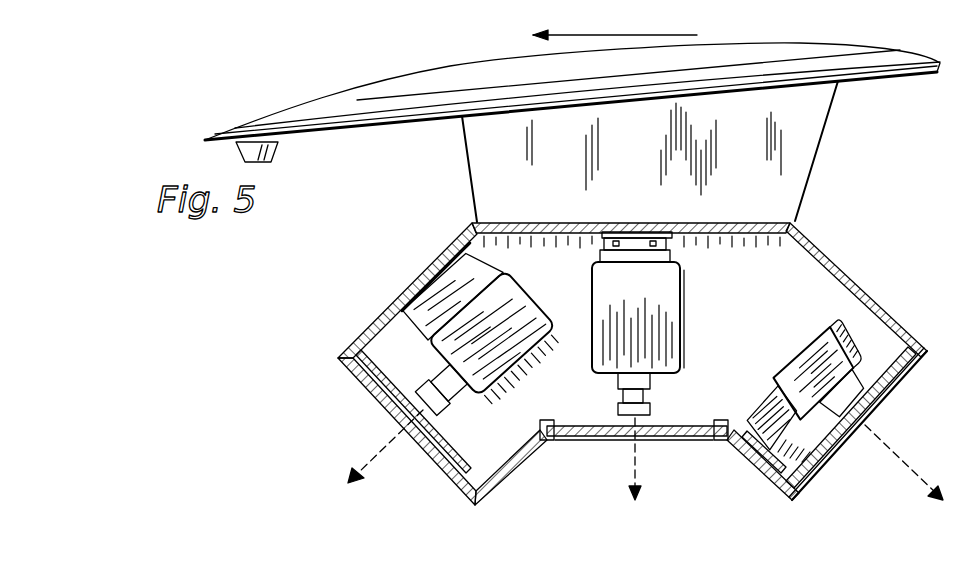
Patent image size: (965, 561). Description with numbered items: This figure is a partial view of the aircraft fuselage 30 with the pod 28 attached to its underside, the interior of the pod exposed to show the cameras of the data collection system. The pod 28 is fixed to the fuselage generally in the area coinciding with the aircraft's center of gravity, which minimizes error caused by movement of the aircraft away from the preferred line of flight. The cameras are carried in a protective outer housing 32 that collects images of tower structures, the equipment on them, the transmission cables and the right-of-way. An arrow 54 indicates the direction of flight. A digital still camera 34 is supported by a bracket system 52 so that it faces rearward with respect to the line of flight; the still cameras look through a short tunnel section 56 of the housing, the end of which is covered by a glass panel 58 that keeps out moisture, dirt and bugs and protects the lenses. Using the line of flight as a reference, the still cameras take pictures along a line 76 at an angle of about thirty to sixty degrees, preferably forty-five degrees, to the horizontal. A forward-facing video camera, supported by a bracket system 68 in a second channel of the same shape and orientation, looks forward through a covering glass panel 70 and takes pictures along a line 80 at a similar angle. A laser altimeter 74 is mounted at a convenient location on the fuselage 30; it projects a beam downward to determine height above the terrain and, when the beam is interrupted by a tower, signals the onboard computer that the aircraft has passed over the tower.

The line 76 is at (893, 450).
The pod 28 is at (416, 192).
The aircraft fuselage 30 is at (889, 74).
The protective outer housing 32 is at (793, 222).
The digital still camera 34 is at (788, 350).
The bracket system 52 is at (757, 408).
The arrow 54 is at (618, 36).
The tunnel section 56 is at (873, 300).
The glass panel 58 is at (893, 383).
The bracket system 68 is at (457, 283).
The glass panel 70 is at (368, 378).
The laser altimeter 74 is at (280, 151).
The line 80 is at (387, 443).